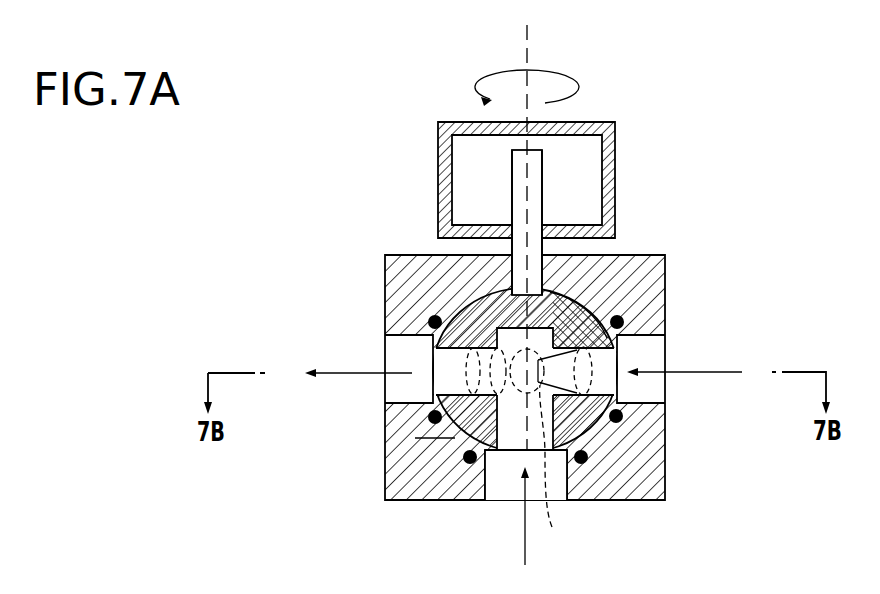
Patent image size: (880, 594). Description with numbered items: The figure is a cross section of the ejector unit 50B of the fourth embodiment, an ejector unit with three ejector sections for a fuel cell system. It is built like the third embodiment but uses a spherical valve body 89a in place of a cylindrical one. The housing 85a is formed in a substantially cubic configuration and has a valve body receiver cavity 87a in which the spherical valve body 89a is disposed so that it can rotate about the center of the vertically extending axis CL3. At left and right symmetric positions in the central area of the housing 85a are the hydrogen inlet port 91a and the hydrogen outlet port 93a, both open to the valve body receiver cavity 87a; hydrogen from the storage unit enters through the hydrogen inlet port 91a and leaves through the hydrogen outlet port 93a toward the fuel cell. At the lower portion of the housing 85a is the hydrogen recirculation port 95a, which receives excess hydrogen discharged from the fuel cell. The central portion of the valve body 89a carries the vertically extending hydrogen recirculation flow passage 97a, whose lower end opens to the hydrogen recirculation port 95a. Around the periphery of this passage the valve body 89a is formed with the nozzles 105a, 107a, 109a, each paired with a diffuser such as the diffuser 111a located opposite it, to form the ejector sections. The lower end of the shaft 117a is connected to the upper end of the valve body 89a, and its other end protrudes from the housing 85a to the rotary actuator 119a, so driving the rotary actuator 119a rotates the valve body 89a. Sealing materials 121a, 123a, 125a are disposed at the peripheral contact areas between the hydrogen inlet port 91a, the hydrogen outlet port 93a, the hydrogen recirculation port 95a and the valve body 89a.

The ejector unit 50B is at (738, 174).
The housing 85a is at (648, 278).
The valve body receiver cavity 87a is at (545, 288).
The spherical valve body 89a is at (588, 310).
The hydrogen inlet port 91a is at (657, 348).
The hydrogen outlet port 93a is at (385, 355).
The hydrogen recirculation port 95a is at (502, 490).
The hydrogen recirculation flow passage 97a is at (415, 438).
The nozzle 105a is at (548, 290).
The nozzle 107a is at (575, 392).
The nozzle 109a is at (562, 472).
The diffuser 111a is at (435, 417).
The shaft 117a is at (545, 160).
The rotary actuator 119a is at (467, 122).
The sealing material 121a is at (616, 416).
The sealing material 123a is at (436, 436).
The sealing material 125a is at (470, 460).
The vertically extending axis CL3 is at (530, 52).